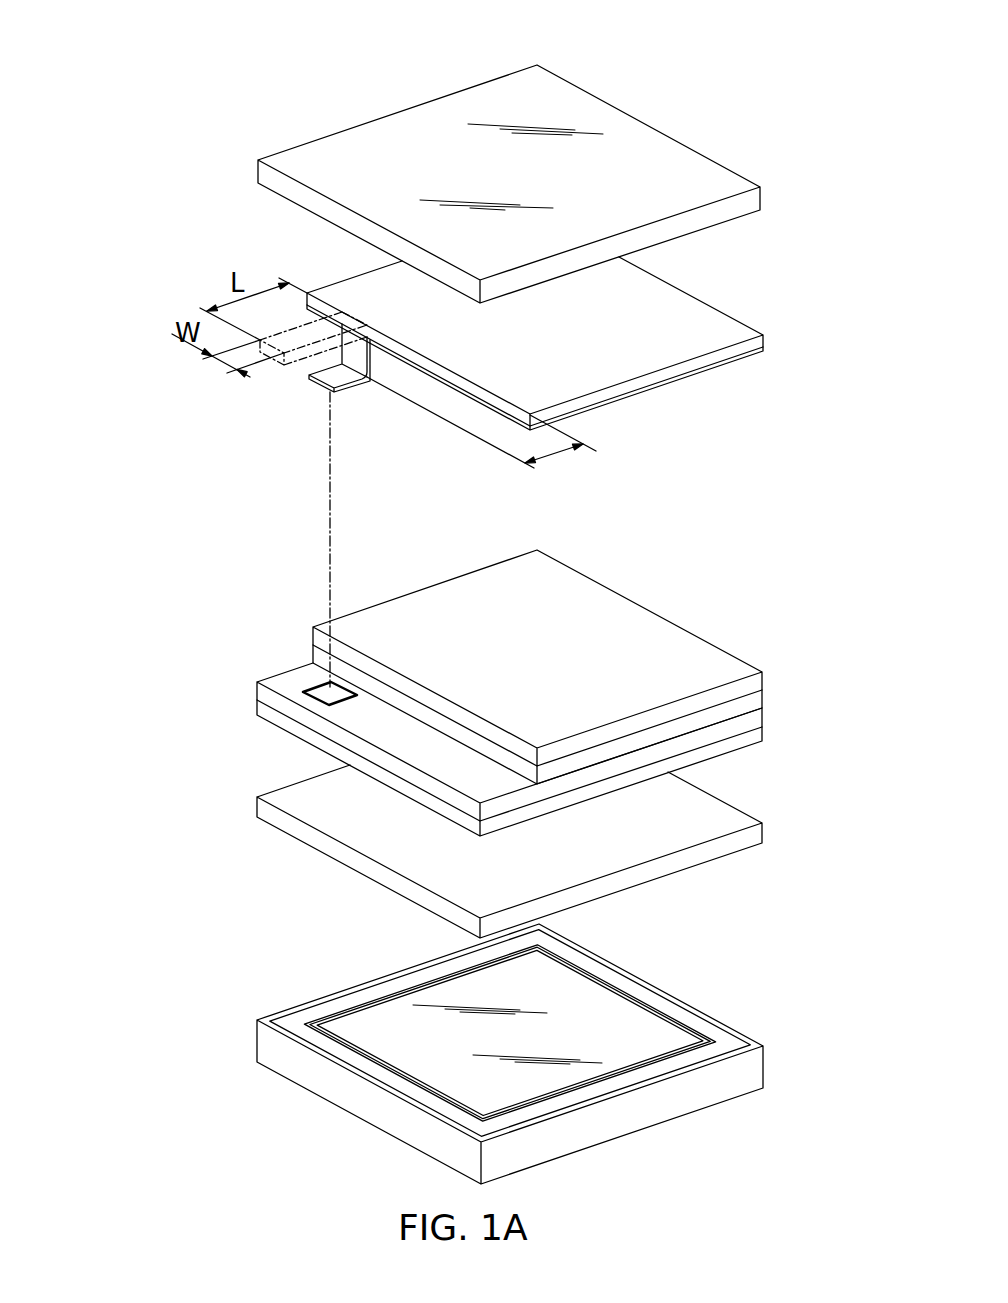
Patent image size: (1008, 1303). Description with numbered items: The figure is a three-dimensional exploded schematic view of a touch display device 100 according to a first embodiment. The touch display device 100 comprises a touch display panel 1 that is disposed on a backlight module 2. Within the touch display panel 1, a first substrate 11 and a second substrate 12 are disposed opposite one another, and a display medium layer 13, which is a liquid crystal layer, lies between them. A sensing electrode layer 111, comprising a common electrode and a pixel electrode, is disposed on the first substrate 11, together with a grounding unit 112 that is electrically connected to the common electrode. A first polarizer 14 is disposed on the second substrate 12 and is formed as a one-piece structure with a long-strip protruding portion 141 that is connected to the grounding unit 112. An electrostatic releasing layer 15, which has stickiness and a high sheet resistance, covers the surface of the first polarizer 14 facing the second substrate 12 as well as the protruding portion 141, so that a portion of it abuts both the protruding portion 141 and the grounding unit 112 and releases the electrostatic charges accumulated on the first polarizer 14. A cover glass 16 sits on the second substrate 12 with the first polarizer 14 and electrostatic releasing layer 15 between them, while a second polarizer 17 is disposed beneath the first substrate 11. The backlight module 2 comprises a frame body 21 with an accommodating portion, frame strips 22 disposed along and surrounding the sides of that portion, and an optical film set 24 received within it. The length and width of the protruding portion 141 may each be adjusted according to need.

The touch display device 100 is at (102, 70).
The touch display panel 1 is at (157, 145).
The backlight module 2 is at (180, 955).
The first substrate 11 is at (472, 735).
The sensing electrode layer 111 is at (257, 687).
The grounding unit 112 is at (320, 687).
The second substrate 12 is at (313, 637).
The display medium layer 13 is at (313, 657).
The first polarizer 14 is at (549, 472).
The protruding portion 141 is at (431, 499).
The electrostatic releasing layer 15 is at (737, 365).
The cover glass 16 is at (258, 172).
The second polarizer 17 is at (260, 807).
The frame body 21 is at (267, 1042).
The frame strips 22 is at (292, 1020).
The optical film set 24 is at (364, 1019).